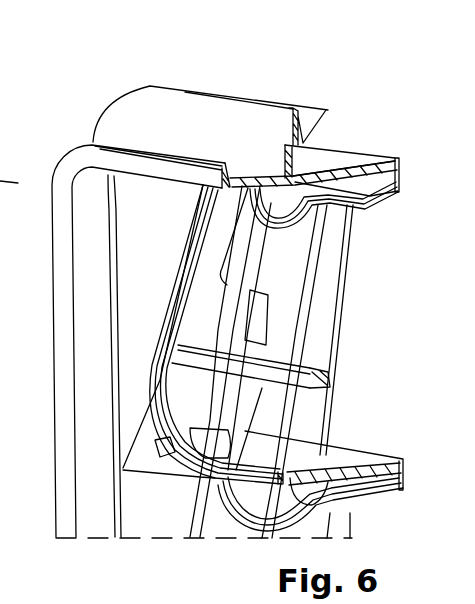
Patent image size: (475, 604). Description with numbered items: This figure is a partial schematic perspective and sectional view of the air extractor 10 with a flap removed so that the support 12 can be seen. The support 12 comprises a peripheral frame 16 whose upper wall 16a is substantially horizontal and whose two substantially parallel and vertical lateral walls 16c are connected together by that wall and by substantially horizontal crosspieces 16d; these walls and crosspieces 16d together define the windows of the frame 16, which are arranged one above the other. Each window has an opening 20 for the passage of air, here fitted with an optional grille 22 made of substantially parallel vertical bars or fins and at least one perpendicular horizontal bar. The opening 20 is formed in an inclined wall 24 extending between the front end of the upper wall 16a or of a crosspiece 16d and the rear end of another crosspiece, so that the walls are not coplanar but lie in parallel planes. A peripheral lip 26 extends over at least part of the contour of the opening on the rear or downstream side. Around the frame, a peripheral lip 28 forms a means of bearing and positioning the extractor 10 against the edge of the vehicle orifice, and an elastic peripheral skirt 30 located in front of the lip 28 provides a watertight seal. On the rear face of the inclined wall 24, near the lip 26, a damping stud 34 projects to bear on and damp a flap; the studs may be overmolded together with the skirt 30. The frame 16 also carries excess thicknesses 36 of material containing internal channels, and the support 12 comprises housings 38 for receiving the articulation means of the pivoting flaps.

The air extractor 10 is at (353, 23).
The support 12 is at (62, 152).
The peripheral frame 16 is at (57, 180).
The upper wall 16a is at (355, 160).
The lateral walls 16c is at (152, 303).
The crosspieces 16d is at (335, 462).
The opening 20 is at (275, 258).
The grille 22 is at (305, 322).
The inclined wall 24 is at (143, 447).
The peripheral lip 26 is at (150, 420).
The peripheral lip 28 is at (158, 111).
The elastic peripheral skirt 30 is at (307, 118).
The damping studs 34 is at (167, 460).
The excess thicknesses of material 36 is at (207, 470).
The housings 38 is at (302, 216).